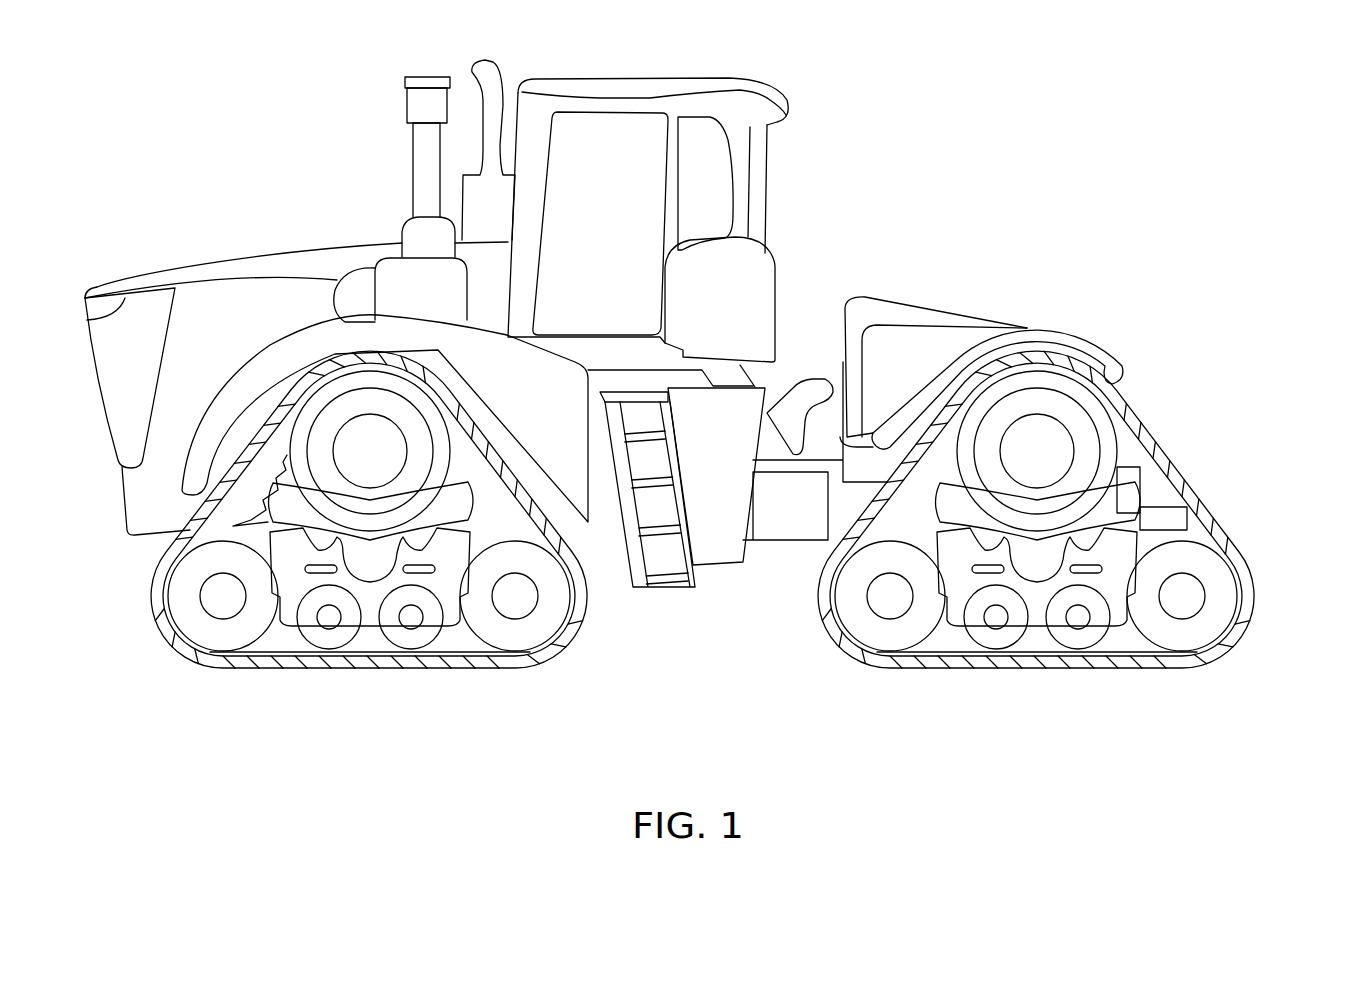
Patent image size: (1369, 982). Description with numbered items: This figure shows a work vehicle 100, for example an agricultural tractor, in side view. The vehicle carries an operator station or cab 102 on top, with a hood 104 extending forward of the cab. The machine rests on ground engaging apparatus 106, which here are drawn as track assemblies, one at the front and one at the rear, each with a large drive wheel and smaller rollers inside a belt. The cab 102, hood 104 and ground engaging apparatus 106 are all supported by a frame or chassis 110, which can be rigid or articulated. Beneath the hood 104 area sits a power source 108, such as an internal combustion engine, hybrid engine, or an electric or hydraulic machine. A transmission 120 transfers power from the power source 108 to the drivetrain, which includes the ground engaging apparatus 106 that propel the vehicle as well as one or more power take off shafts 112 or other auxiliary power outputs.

The work vehicle 100 is at (875, 85).
The operator station or cab 102 is at (628, 76).
The hood 104 is at (167, 267).
The ground engaging apparatus 106 is at (176, 642).
The power source 108 is at (258, 308).
The frame or chassis 110 is at (740, 507).
The power take off (PTO) shaft 112 is at (1195, 376).
The transmission 120 is at (779, 622).